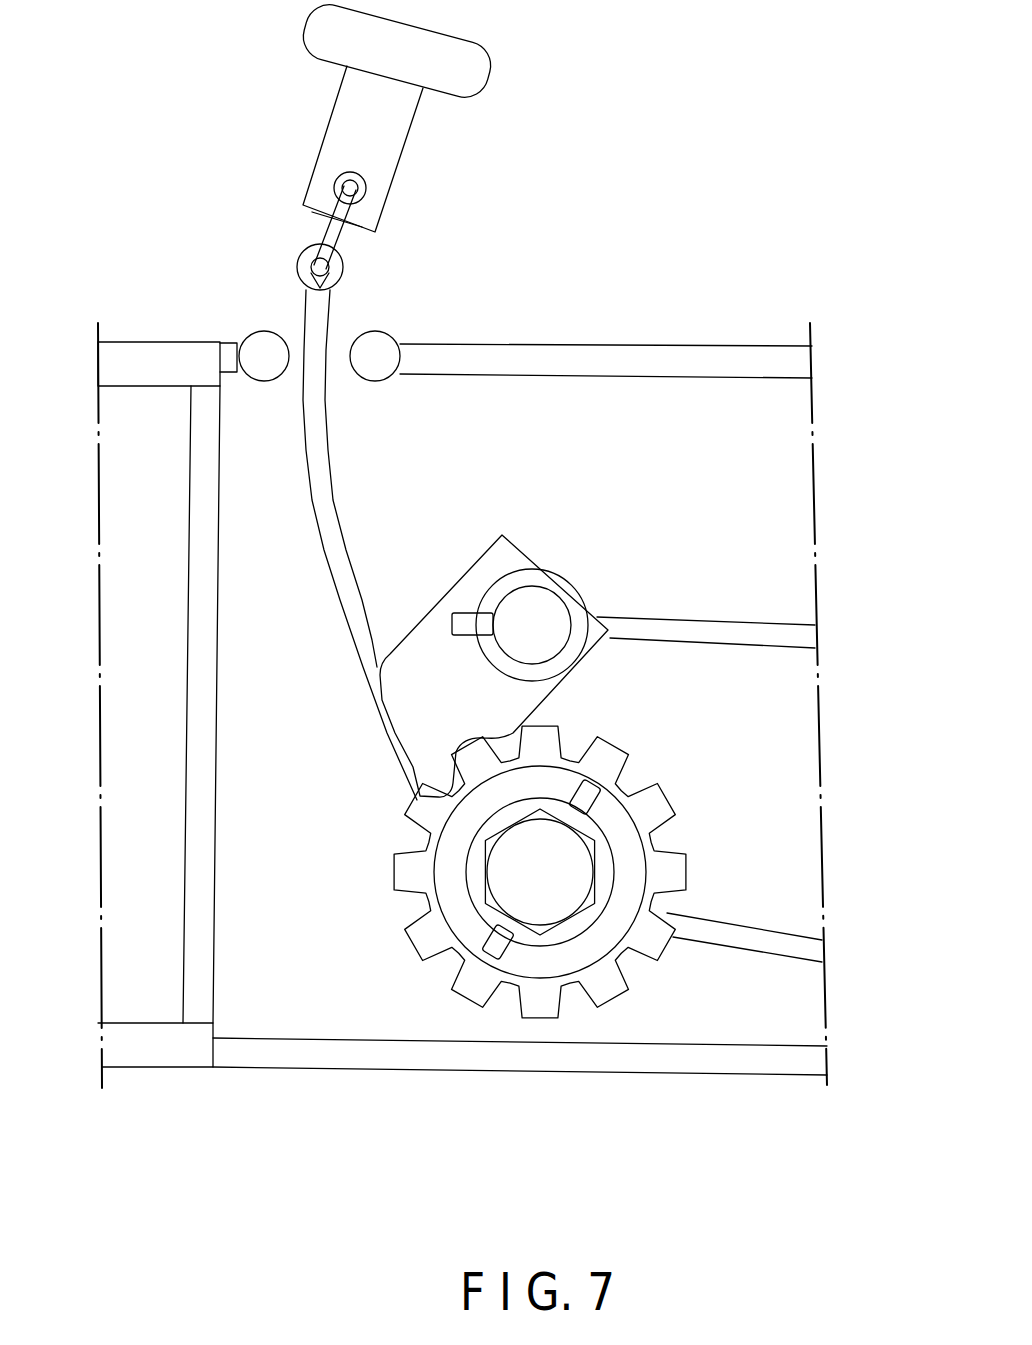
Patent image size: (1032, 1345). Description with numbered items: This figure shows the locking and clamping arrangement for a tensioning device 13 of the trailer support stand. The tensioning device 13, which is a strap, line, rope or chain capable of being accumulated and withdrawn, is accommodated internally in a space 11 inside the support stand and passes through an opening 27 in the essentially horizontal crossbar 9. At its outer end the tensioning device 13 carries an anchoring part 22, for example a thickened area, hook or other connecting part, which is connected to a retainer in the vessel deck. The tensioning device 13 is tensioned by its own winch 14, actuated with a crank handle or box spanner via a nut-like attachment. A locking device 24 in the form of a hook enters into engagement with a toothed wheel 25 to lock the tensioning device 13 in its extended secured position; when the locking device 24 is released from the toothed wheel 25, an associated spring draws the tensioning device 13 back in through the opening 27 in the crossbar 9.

The crossbar 9 is at (742, 1082).
The space 11 is at (770, 838).
The tensioning device 13 is at (310, 310).
The winch 14 is at (558, 1045).
The anchoring part 22 is at (480, 82).
The locking device 24 is at (437, 660).
The toothed wheel 25 is at (458, 1012).
The opening 27 is at (346, 325).